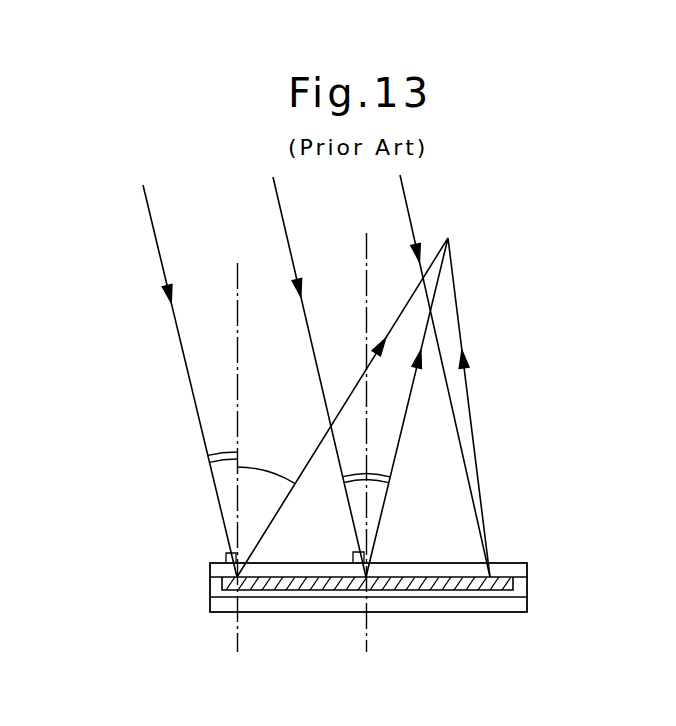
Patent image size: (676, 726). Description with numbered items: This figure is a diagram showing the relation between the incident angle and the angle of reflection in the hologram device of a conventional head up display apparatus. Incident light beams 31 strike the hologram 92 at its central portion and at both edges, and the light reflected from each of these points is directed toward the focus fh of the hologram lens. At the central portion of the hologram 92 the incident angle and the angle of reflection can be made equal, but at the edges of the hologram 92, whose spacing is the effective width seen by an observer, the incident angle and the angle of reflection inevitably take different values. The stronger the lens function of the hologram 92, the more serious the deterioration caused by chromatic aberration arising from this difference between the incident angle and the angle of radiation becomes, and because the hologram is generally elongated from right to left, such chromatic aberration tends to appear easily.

The incident light beam 31 is at (153, 228).
The hologram 92 is at (519, 530).
The focus of the hologram lens fh is at (448, 238).